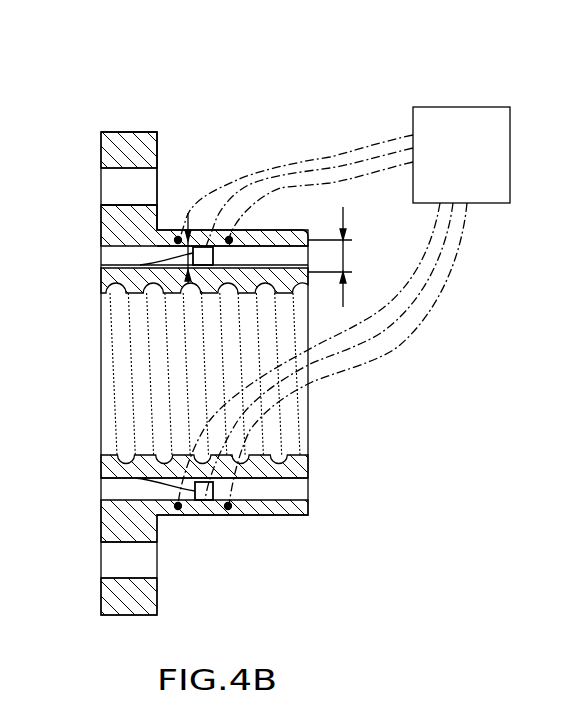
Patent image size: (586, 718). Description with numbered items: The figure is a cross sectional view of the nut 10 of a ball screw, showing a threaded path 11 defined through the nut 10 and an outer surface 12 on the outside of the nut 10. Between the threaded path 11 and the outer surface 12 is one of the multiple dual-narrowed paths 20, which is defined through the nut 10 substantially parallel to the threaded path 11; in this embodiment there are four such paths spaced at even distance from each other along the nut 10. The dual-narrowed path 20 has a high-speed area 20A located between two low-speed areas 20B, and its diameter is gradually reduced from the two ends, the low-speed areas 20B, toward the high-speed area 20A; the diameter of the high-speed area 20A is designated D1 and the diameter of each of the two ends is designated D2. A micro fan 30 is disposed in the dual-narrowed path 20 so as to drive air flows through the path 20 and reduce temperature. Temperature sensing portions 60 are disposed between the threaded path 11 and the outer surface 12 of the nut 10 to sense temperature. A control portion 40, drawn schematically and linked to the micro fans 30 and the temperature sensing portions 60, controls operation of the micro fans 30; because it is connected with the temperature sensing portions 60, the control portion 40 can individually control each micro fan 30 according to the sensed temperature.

The nut 10 is at (299, 522).
The threaded path 11 is at (277, 427).
The outer surface 12 is at (260, 516).
The dual-narrowed path 20 is at (362, 100).
The high-speed area 20A is at (208, 240).
The low-speed area 20B is at (128, 247).
The micro fan 30 is at (203, 267).
The control portion 40 is at (457, 107).
The temperature sensing portion 60 is at (172, 248).
The diameter of the high-speed area D1 is at (186, 258).
The diameter of each of the two ends D2 is at (348, 257).